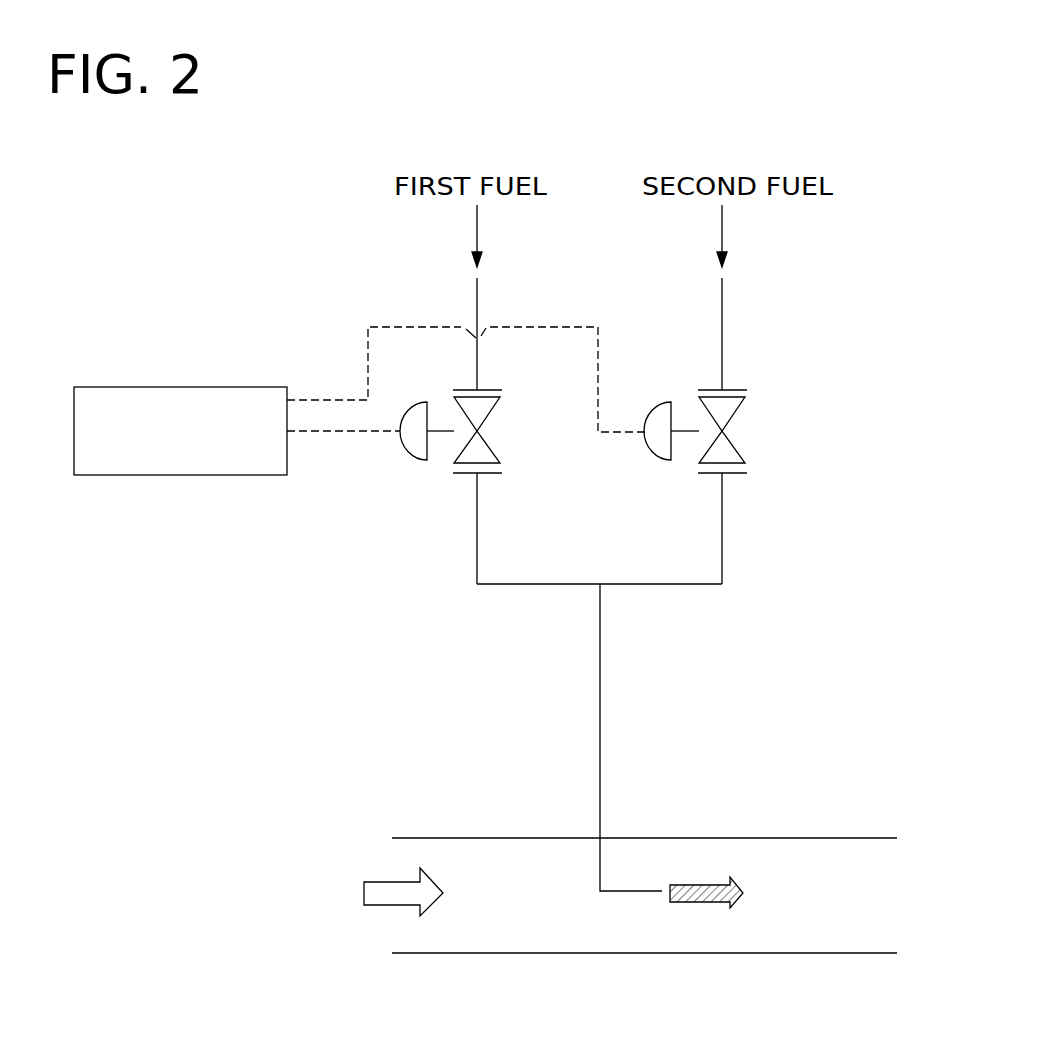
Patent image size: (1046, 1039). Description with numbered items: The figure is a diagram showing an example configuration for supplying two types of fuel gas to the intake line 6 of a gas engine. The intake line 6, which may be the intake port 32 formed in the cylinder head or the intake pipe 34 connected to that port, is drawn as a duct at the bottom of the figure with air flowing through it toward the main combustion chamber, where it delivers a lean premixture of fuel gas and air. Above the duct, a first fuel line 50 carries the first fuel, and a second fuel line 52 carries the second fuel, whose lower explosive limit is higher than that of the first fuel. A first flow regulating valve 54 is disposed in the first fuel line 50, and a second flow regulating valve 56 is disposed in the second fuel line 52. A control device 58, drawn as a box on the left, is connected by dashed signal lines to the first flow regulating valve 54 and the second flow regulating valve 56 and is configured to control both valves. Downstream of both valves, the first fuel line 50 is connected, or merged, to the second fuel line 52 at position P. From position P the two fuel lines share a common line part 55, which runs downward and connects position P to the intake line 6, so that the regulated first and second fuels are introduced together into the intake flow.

The first fuel line 50 is at (477, 301).
The second fuel line 52 is at (722, 336).
The first flow regulating valve 54 is at (404, 447).
The second flow regulating valve 56 is at (648, 450).
The control device 58 is at (207, 387).
The common line part 55 is at (600, 720).
The position P is at (600, 586).
The intake line 6 is at (658, 861).
The intake port 32 is at (630, 895).
The intake pipe 34 is at (830, 838).